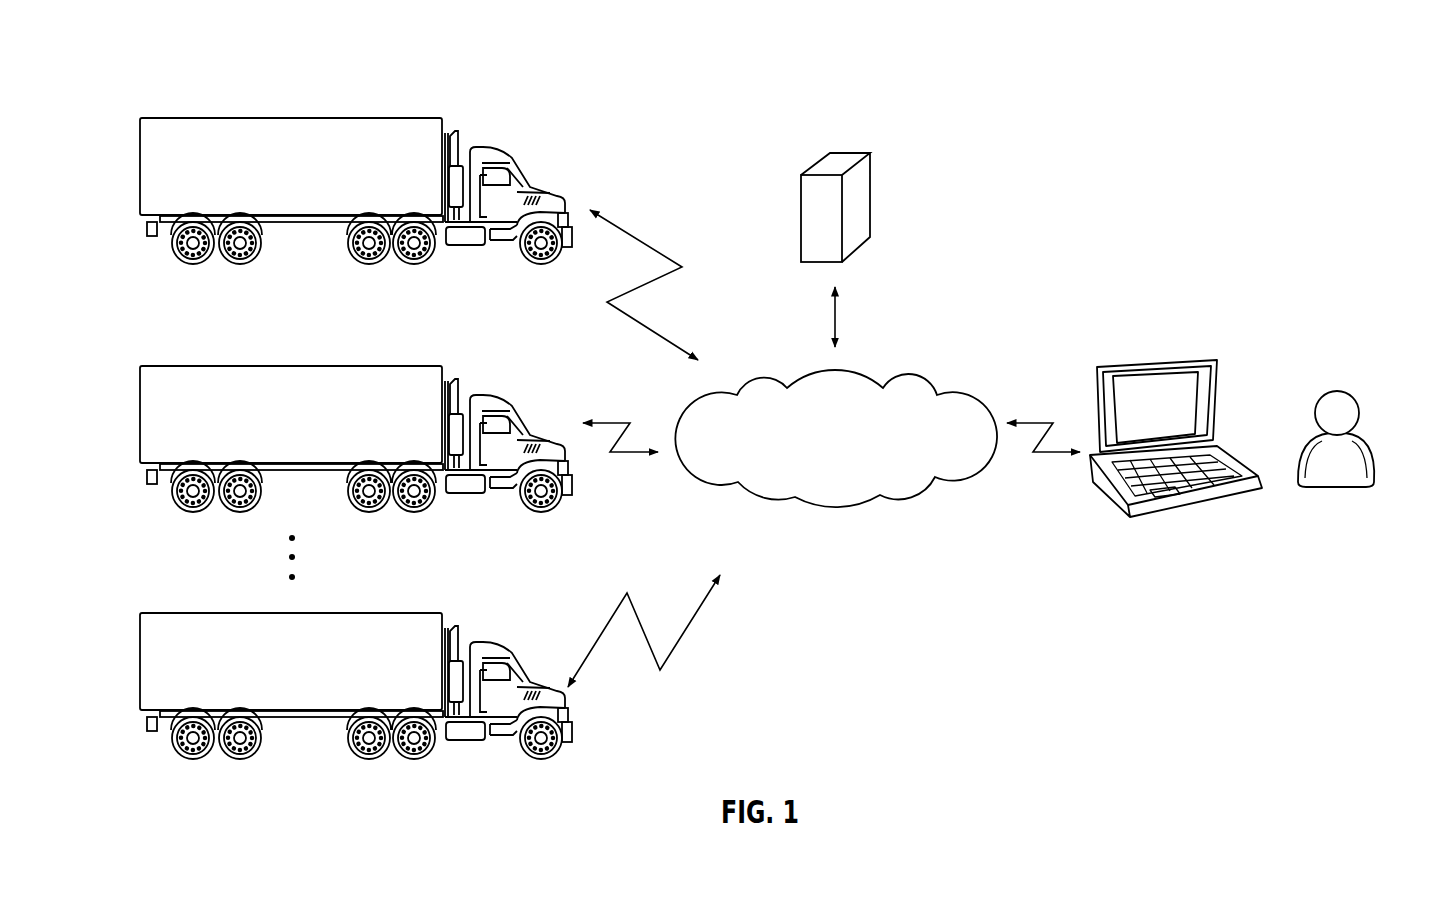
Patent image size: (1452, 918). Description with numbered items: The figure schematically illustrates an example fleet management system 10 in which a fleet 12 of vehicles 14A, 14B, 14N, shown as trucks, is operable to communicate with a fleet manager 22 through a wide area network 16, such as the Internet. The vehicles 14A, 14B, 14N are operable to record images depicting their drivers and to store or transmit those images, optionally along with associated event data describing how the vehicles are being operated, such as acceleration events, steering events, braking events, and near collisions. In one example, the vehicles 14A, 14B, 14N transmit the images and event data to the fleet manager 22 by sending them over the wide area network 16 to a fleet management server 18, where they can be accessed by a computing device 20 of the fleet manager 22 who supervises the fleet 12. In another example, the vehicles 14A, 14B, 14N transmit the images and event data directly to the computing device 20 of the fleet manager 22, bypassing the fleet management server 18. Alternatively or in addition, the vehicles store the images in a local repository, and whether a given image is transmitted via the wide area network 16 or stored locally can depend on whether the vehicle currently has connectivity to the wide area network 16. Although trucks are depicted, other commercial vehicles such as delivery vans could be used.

The fleet management system 10 is at (1382, 82).
The fleet 12 is at (136, 101).
The vehicle 14A is at (504, 126).
The vehicle 14B is at (503, 391).
The vehicle 14N is at (503, 636).
The wide area network 16 is at (759, 498).
The fleet management server 18 is at (863, 207).
The computing device 20 is at (1122, 353).
The fleet manager 22 is at (1313, 381).